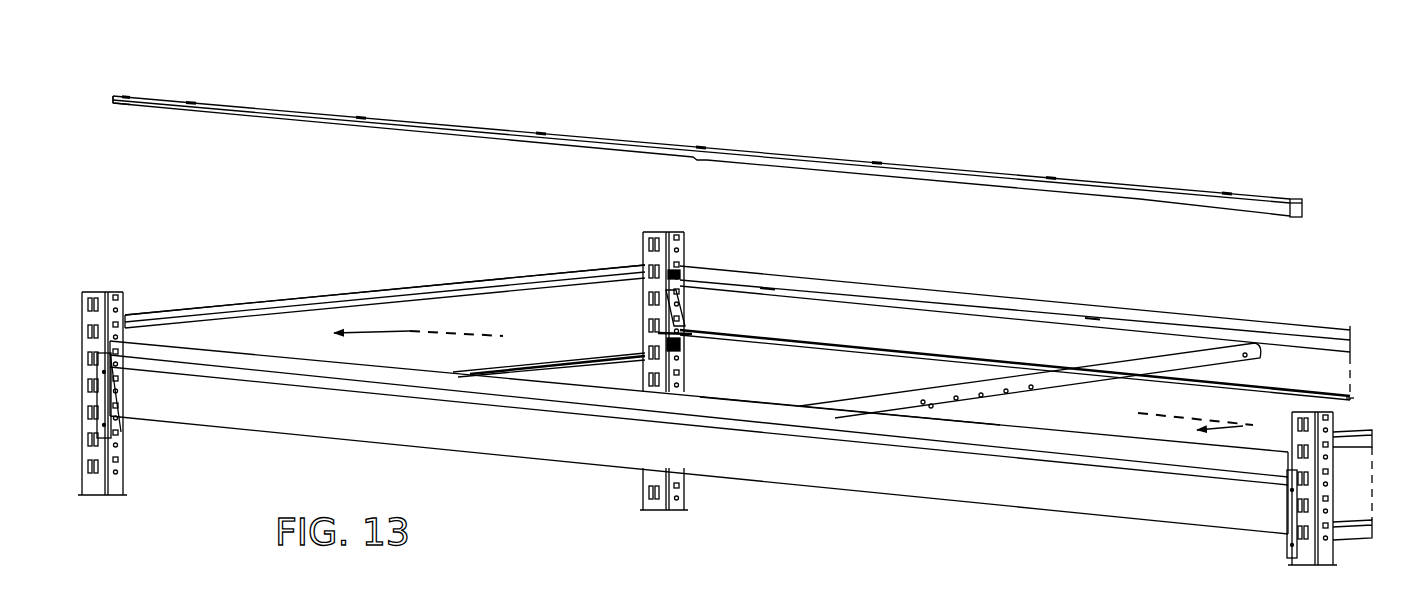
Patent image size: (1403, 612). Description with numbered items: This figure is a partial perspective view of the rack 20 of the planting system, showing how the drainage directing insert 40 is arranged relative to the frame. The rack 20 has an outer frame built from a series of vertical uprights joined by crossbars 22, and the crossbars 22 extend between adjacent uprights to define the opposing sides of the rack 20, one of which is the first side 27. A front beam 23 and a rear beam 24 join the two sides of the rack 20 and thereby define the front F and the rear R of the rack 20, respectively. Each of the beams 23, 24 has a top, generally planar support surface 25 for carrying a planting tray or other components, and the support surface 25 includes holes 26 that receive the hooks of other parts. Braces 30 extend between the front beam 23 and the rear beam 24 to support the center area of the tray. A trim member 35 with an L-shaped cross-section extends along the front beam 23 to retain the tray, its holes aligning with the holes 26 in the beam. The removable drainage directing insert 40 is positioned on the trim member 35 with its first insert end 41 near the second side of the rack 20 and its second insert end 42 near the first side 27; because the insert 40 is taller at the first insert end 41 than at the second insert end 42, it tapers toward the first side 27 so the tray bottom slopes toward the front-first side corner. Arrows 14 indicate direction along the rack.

The direction of movement arrows 14 is at (774, 384).
The rack 20 is at (1112, 122).
The crossbars 22 is at (515, 300).
The front beam 23 is at (533, 445).
The rear beam 24 is at (997, 332).
The support surface 25 is at (855, 298).
The holes 26 is at (923, 306).
The first side 27 is at (152, 273).
The braces 30 is at (1042, 385).
The trim member 35 is at (850, 422).
The drainage directing insert 40 is at (905, 173).
The first insert end 41 is at (1290, 176).
The second insert end 42 is at (165, 68).
The rear R is at (1255, 288).
The front F is at (198, 465).